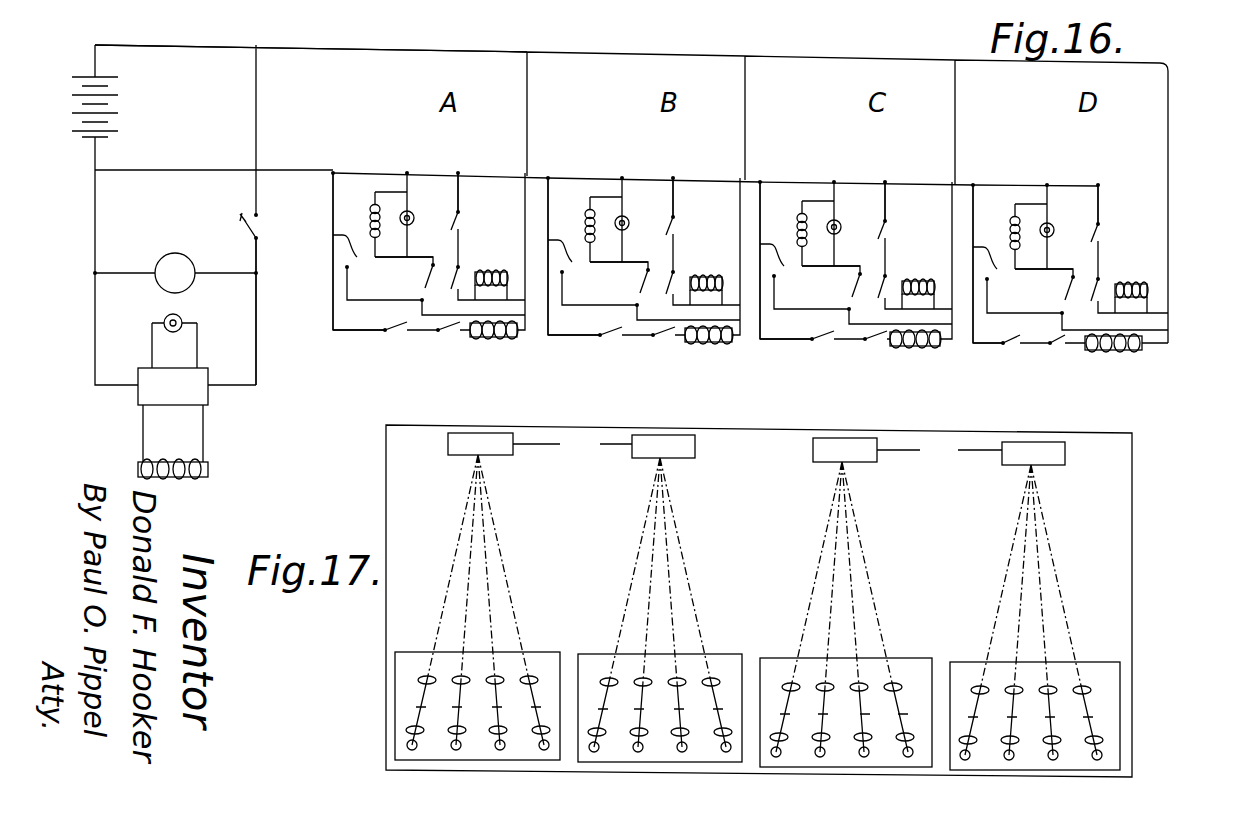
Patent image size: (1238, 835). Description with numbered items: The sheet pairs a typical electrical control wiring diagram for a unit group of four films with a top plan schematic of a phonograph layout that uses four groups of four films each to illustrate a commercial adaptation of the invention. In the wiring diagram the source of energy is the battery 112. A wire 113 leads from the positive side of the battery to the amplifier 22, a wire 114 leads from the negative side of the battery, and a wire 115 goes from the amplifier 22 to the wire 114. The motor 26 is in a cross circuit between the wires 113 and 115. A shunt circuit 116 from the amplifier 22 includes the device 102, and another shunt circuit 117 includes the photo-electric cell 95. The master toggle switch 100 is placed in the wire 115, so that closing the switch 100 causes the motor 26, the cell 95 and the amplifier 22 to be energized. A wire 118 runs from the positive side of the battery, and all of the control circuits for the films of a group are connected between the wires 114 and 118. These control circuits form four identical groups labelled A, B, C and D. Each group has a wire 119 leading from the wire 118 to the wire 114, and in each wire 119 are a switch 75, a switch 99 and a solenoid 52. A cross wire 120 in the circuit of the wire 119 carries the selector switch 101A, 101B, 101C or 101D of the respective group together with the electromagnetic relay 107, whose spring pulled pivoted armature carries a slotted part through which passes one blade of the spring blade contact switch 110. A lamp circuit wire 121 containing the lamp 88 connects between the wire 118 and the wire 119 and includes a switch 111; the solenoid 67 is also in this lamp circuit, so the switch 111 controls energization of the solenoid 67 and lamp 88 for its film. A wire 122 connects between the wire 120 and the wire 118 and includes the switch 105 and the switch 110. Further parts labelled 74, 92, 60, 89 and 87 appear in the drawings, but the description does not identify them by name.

In FIG. 16, the wire 114 is at (192, 45).
In FIG. 16, the source of energy 112 is at (118, 104).
In FIG. 16, the wire 113 is at (95, 192).
In FIG. 16, the wire 118 is at (281, 172).
In FIG. 16, the master toggle switch 100 is at (250, 228).
In FIG. 16, the wire 115 is at (256, 308).
In FIG. 16, the motor 26 is at (174, 253).
In FIG. 16, the photo-electric cell 95 is at (165, 317).
In FIG. 16, the shunt circuit 117 is at (152, 331).
In FIG. 16, the amplifier 22 is at (205, 398).
In FIG. 16, the shunt circuit 116 is at (143, 430).
In FIG. 16, the device 102 is at (208, 470).
In FIG. 16, the wire 119 is at (649, 245).
In FIG. 16, the cross wire 120 is at (653, 324).
In FIG. 16, the lamp circuit wire 121 is at (735, 254).
In FIG. 16, the wire 122 is at (809, 182).
In FIG. 16, the lamp 88 is at (746, 188).
In FIG. 16, the solenoid 67 is at (683, 215).
In FIG. 16, the switch 105 is at (801, 216).
In FIG. 16, the electromagnetic relay 107 is at (845, 267).
In FIG. 16, the spring blade contact switch 110 is at (764, 332).
In FIG. 16, the switch 111 is at (757, 309).
In FIG. 16, the selector switch 101A is at (307, 263).
In FIG. 16, the selector switch 101B is at (600, 269).
In FIG. 16, the selector switch 101C is at (811, 273).
In FIG. 16, the selector switch 101D is at (1023, 276).
In FIG. 16, the switch 74 is at (699, 349).
In FIG. 16, the switch 99 is at (751, 357).
In FIG. 16, the solenoid 52 is at (808, 359).
In FIG. 17, the light source 92 is at (756, 447).
In FIG. 17, the switch 75 is at (458, 678).
In FIG. 17, the slit 60 is at (455, 707).
In FIG. 17, the lens 89 is at (450, 730).
In FIG. 17, the photocell 87 is at (451, 746).